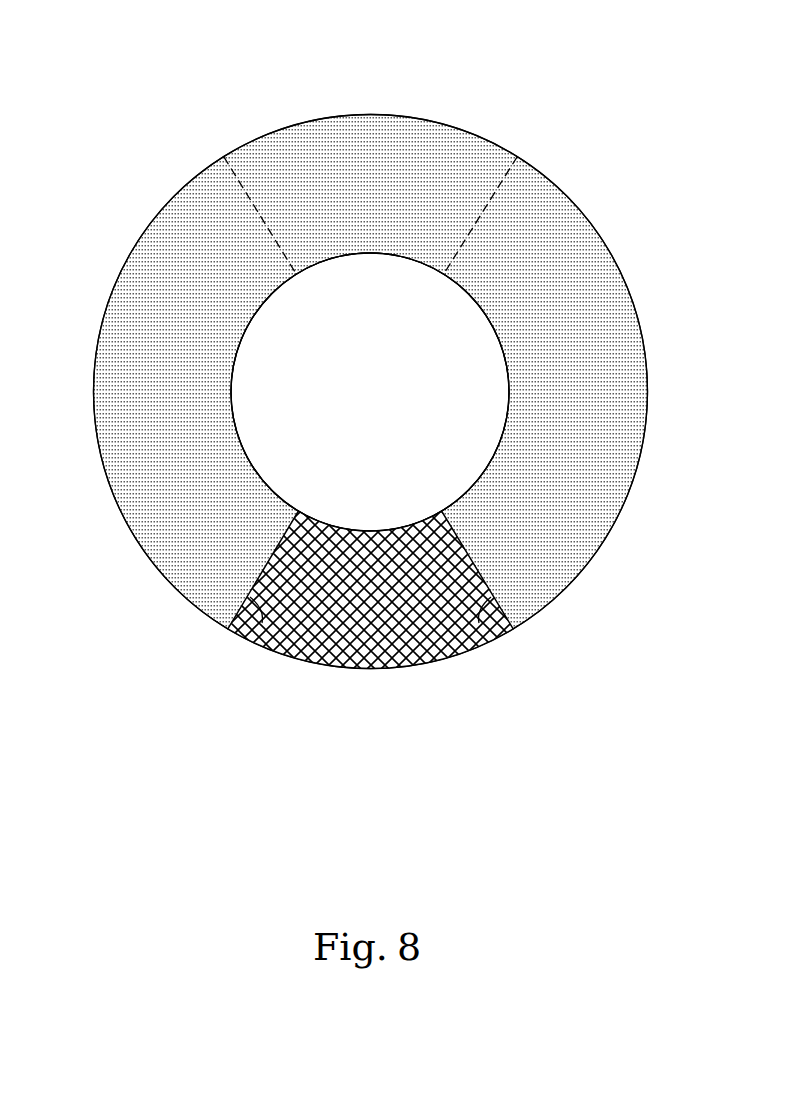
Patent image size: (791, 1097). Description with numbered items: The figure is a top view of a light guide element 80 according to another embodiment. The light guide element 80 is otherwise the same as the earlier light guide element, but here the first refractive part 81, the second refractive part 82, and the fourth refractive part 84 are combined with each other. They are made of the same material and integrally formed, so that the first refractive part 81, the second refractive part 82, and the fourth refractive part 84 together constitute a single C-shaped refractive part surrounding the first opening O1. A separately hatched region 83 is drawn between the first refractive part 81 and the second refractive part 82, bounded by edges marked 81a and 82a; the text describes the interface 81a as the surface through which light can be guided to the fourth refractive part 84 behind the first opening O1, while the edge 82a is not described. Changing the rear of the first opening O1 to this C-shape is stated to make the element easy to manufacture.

The light guide element 80 is at (52, 46).
The first refractive part 81 is at (183, 403).
The second refractive part 82 is at (587, 404).
The third portion 83 is at (384, 613).
The fourth refractive part 84 is at (384, 197).
The interface 81a is at (243, 639).
The side surface of second portion 82a is at (494, 639).
The first opening O1 is at (462, 327).